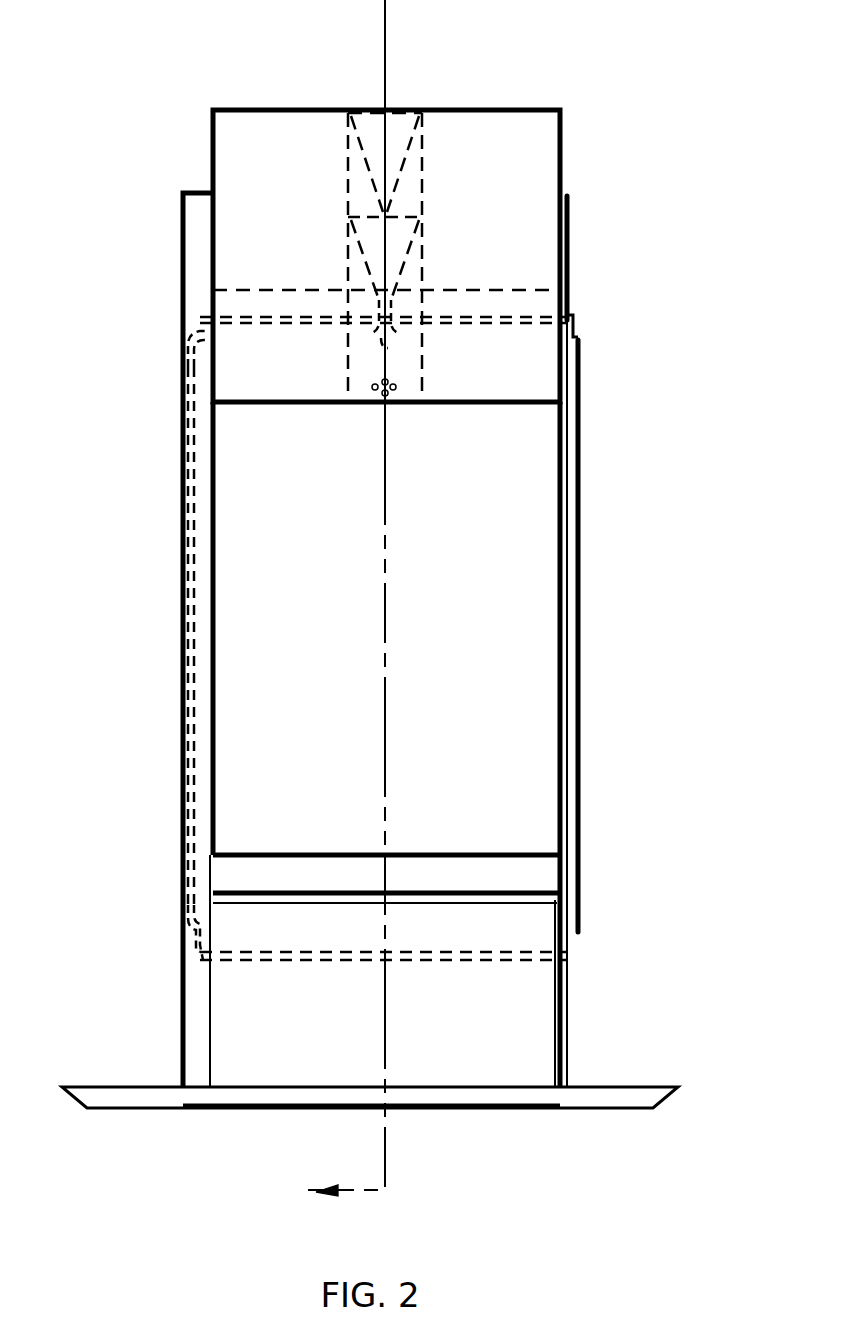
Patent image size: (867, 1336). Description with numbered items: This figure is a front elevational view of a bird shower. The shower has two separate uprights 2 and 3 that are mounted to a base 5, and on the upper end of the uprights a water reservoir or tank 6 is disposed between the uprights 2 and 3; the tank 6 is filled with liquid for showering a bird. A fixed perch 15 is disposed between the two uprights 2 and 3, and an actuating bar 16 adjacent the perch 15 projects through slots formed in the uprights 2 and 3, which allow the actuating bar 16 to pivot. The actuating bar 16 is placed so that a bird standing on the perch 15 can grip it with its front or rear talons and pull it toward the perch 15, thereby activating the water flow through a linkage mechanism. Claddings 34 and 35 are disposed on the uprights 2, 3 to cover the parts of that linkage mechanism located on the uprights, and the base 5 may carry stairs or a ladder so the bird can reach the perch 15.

The upright 2 is at (582, 648).
The upright 3 is at (183, 577).
The base 5 is at (522, 1047).
The water reservoir/tank 6 is at (547, 160).
The fixed perch 15 is at (517, 853).
The actuating bar 16 is at (532, 907).
The cladding 34 is at (582, 387).
The cladding 35 is at (180, 330).